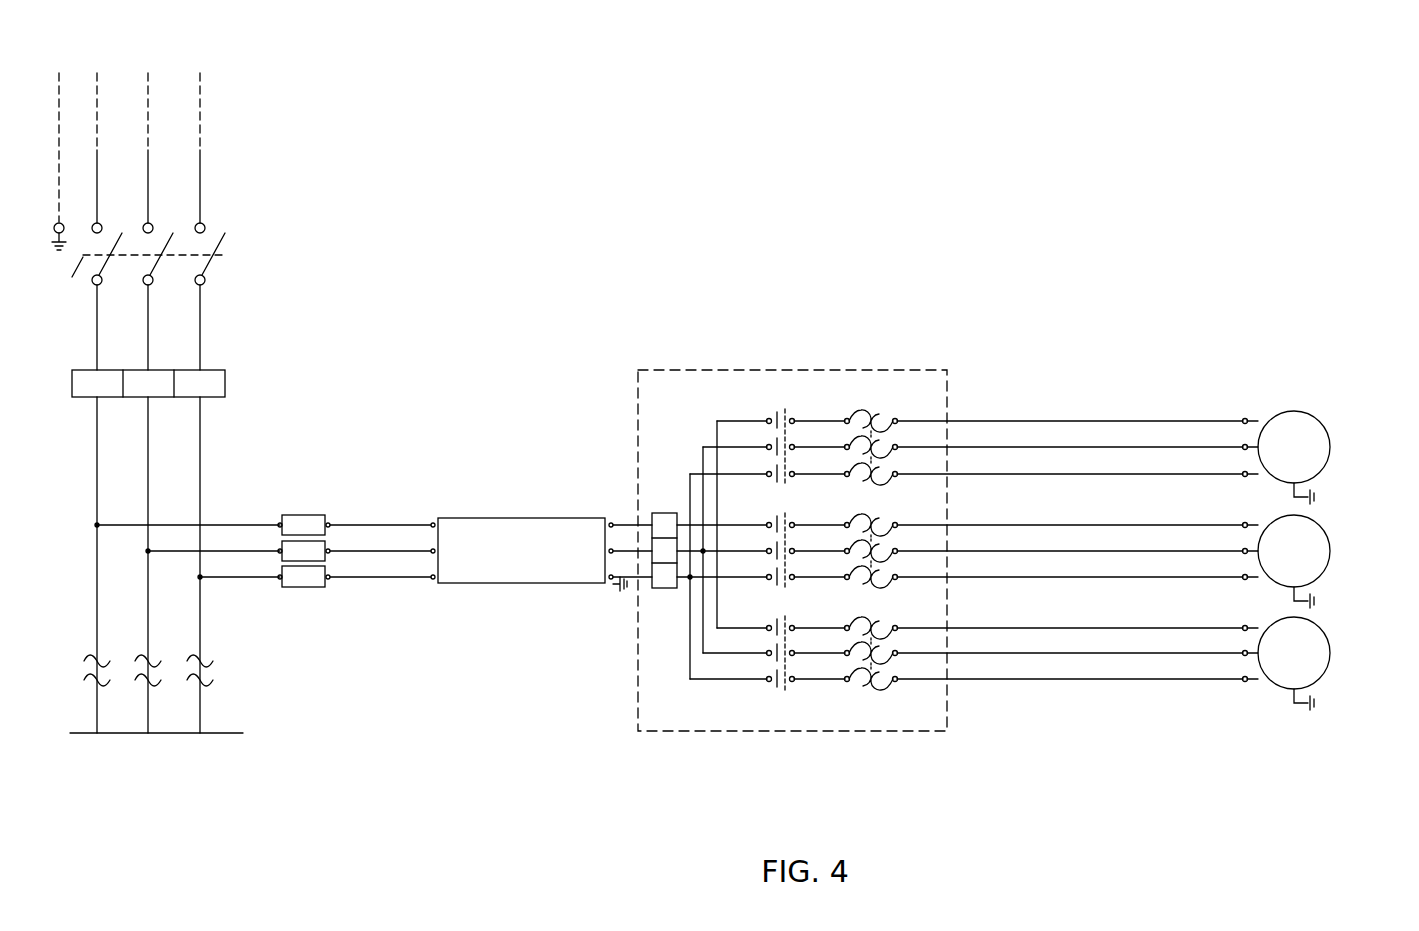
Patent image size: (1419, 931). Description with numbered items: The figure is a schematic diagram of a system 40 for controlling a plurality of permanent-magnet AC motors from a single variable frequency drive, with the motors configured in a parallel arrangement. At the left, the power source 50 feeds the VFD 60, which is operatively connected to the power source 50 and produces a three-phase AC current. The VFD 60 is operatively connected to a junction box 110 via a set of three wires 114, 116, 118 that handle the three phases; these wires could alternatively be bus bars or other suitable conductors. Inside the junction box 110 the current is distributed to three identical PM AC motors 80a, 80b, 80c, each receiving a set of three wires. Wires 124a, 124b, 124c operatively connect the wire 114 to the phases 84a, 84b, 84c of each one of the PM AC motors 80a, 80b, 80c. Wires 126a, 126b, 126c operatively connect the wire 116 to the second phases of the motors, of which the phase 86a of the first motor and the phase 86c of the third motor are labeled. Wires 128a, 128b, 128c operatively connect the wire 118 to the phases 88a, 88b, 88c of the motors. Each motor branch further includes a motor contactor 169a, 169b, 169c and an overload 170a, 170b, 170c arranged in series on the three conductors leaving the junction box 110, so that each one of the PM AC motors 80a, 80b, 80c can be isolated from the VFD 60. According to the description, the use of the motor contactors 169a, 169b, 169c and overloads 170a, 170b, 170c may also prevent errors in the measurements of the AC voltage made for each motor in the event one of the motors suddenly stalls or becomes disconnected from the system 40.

The system 40 is at (1166, 110).
The power source 50 is at (227, 223).
The VFD 60 is at (518, 488).
The PM AC motor 80a is at (1330, 437).
The PM AC motor 80b is at (1330, 541).
The PM AC motor 80c is at (1330, 653).
The phase 84a is at (1255, 421).
The phase 84b is at (1257, 524).
The phase 84c is at (1253, 630).
The phase 86a is at (1250, 472).
The phase 86c is at (1253, 656).
The phase 88a is at (1242, 447).
The phase 88b is at (1250, 578).
The phase 88c is at (1255, 682).
The junction box 110 is at (915, 733).
The wire 114 is at (627, 523).
The wire 116 is at (620, 553).
The wire 118 is at (633, 580).
The wire 124a is at (757, 420).
The wire 124b is at (745, 522).
The wire 124c is at (758, 630).
The wire 126a is at (730, 447).
The wire 126b is at (737, 550).
The wire 126c is at (722, 655).
The wire 128a is at (697, 472).
The wire 128b is at (745, 579).
The wire 128c is at (695, 688).
The motor contactor 169a is at (782, 407).
The motor contactor 169b is at (778, 512).
The motor contactor 169c is at (778, 693).
The overload 170a is at (870, 405).
The overload 170b is at (872, 512).
The overload 170c is at (868, 693).